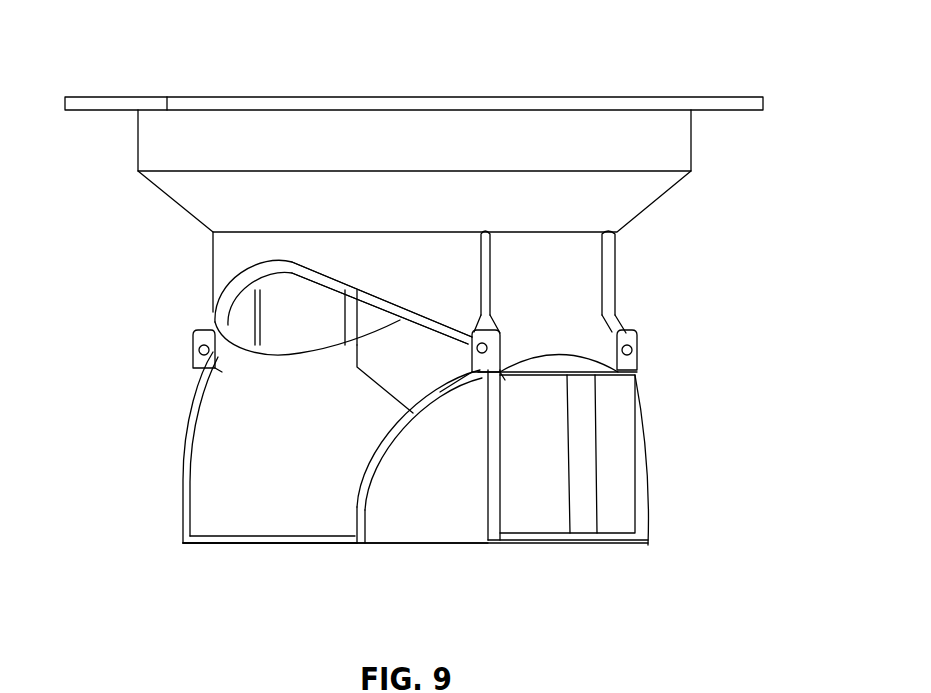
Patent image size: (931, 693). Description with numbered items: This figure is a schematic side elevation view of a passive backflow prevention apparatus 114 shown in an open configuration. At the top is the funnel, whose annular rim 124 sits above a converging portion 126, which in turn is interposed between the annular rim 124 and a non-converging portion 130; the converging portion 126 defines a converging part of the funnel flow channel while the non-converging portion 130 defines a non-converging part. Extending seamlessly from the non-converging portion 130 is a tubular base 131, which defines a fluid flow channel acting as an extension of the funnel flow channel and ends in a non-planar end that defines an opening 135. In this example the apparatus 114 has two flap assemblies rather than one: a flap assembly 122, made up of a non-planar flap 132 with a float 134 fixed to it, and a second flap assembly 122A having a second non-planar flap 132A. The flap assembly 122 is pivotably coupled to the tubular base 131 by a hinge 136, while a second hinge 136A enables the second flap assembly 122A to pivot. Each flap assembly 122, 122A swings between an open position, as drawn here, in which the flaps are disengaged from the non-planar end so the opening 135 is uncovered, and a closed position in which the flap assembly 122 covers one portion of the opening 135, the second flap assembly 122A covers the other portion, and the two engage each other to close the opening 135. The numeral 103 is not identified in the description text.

The passive backflow prevention apparatus 114 is at (446, 320).
The annular rim 124 is at (748, 97).
The converging portion 126 is at (667, 186).
The non-converging portion 130 is at (578, 300).
The second hinge 136A is at (193, 335).
The hinge 136 is at (640, 338).
The tubular base 131 is at (460, 333).
The loop strap 103 is at (296, 280).
The opening 135 is at (394, 320).
The second non-planar flap 132A is at (212, 462).
The non-planar flap 132 is at (427, 507).
The float 134 is at (618, 456).
The flap assembly 122 is at (610, 545).
The second flap assembly 122A is at (268, 545).